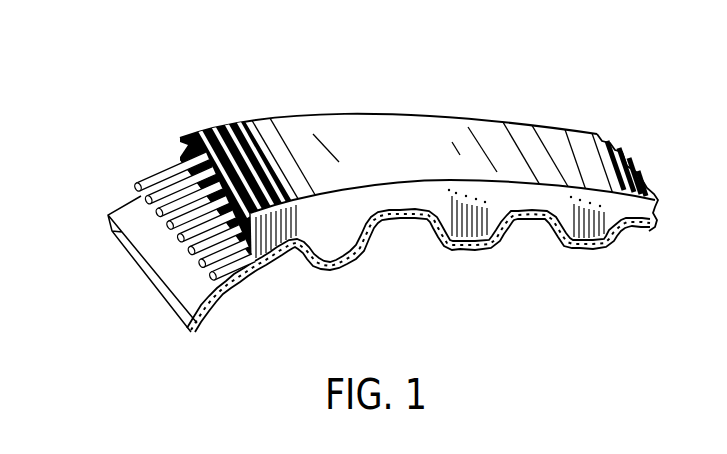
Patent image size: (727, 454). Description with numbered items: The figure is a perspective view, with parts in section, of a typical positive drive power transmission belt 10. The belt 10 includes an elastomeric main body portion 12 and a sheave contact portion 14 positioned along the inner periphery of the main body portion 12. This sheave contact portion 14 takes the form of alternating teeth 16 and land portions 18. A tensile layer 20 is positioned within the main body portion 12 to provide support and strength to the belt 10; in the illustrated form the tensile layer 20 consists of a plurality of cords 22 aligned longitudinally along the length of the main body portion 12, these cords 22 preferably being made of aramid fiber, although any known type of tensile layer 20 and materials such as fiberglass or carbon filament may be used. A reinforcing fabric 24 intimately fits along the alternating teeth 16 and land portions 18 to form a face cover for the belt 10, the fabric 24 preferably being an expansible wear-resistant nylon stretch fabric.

The positive drive power transmission belt 10 is at (226, 97).
The elastomeric main body portion 12 is at (389, 138).
The sheave contact portion 14 is at (307, 267).
The teeth 16 is at (344, 246).
The land portions 18 is at (402, 225).
The tensile layer 20 is at (131, 168).
The cords 22 is at (168, 228).
The reinforcing fabric 24 is at (552, 222).